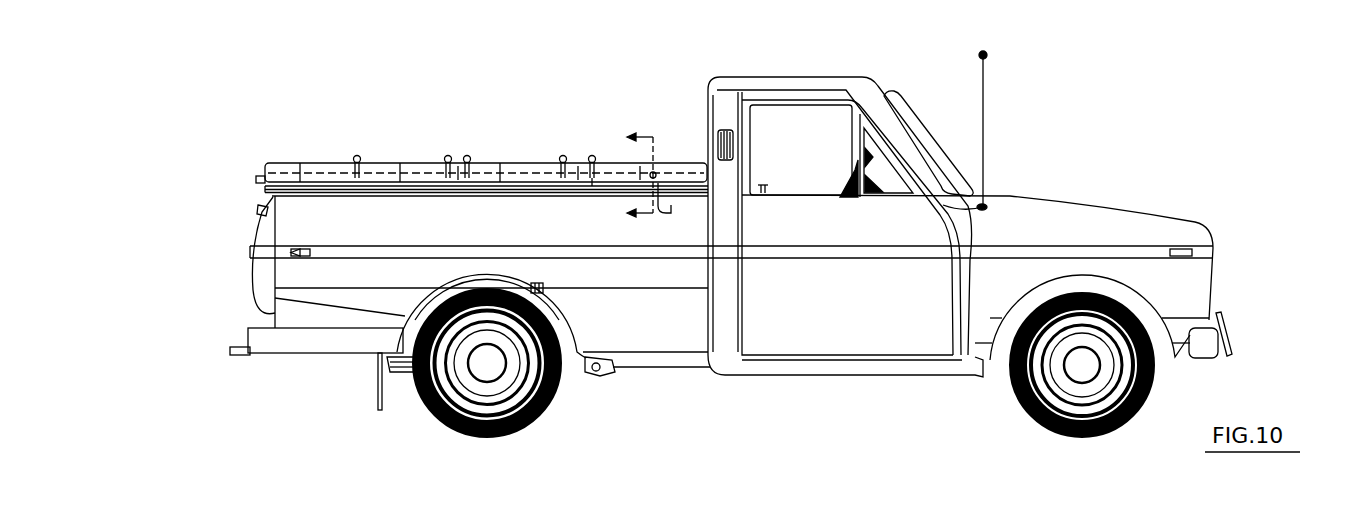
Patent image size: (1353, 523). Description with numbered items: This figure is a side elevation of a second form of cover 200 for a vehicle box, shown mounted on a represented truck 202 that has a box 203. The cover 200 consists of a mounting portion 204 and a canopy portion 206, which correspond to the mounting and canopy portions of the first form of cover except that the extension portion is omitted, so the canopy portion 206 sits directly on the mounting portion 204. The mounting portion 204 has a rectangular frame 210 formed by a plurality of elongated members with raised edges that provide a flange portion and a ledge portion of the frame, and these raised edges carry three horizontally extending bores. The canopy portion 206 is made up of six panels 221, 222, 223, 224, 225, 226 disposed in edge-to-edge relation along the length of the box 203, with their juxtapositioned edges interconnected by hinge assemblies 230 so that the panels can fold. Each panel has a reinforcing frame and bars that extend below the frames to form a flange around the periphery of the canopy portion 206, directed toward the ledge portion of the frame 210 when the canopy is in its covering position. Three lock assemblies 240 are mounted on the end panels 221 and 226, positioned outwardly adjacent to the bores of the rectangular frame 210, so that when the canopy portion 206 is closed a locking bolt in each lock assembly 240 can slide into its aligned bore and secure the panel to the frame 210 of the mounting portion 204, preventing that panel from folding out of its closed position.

The cover 200 is at (296, 134).
The truck 202 is at (825, 315).
The box 203 is at (635, 283).
The mounting portion 204 is at (720, 188).
The canopy portion 206 is at (733, 145).
The rectangular frame 210 is at (589, 178).
The panel 221 is at (293, 162).
The panel 222 is at (378, 160).
The panel 223 is at (455, 160).
The panel 224 is at (490, 163).
The panel 225 is at (575, 160).
The panel 226 is at (663, 163).
The hinge assemblies 230 is at (357, 156).
The lock assemblies 240 is at (262, 182).